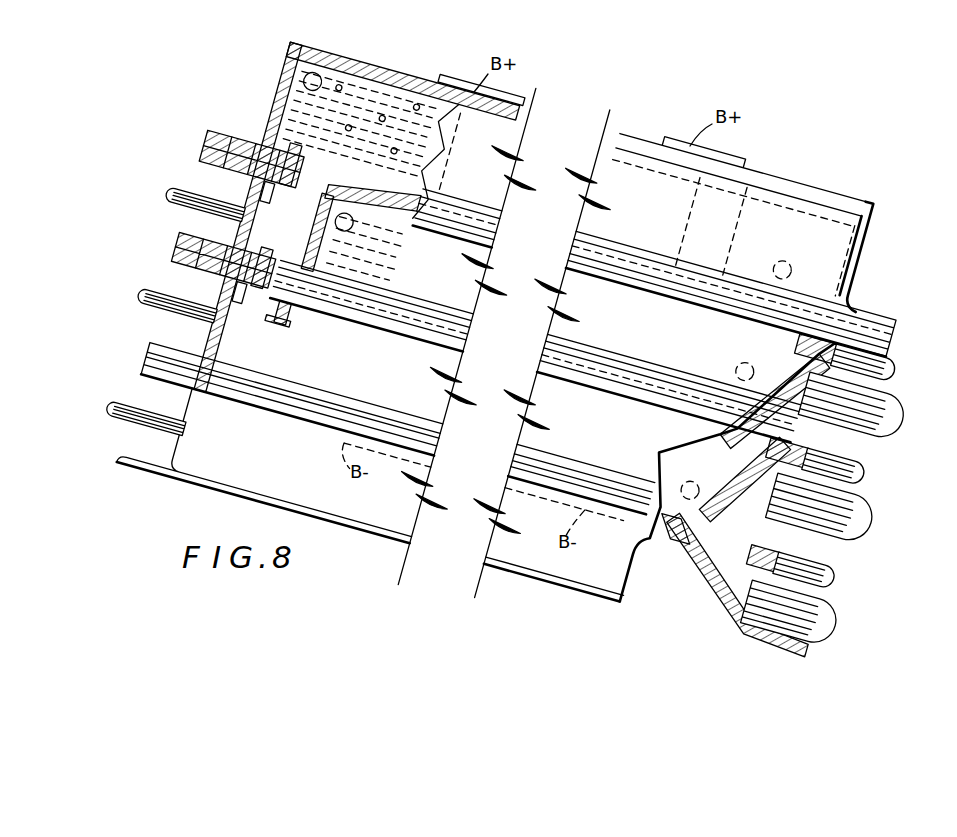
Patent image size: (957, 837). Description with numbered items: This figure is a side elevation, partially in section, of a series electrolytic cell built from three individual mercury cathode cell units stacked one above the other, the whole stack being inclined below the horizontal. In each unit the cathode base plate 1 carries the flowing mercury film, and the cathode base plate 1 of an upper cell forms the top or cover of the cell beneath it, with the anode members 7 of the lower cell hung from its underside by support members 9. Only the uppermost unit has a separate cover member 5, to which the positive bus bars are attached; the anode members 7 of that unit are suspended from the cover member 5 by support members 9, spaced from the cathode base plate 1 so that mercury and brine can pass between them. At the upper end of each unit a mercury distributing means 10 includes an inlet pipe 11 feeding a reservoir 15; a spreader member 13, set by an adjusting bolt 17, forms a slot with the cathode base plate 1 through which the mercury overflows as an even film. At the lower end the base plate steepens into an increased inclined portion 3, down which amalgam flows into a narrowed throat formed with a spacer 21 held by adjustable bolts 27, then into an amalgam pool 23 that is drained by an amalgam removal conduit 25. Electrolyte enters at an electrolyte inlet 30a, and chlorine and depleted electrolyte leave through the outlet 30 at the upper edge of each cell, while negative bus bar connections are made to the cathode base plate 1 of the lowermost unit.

The cathode base plate 1 is at (752, 478).
The increased inclined portion of the cathode base plate 3 is at (716, 584).
The cover member 5 is at (440, 80).
The anode members 7 is at (419, 161).
The support members 9 is at (415, 140).
The mercury distributing means 10 is at (342, 252).
The inlet pipe 11 is at (178, 192).
The spreader member 13 is at (310, 172).
The reservoir 15 is at (262, 206).
The adjusting bolt 17 is at (283, 185).
The spacer 21 is at (722, 512).
The amalgam pool 23 is at (680, 532).
The amalgam removal conduit 25 is at (905, 405).
The adjustable bolts 27 is at (886, 364).
The chlorine and depleted electrolyte outlet 30 is at (322, 74).
The electrolyte inlet 30a is at (660, 474).